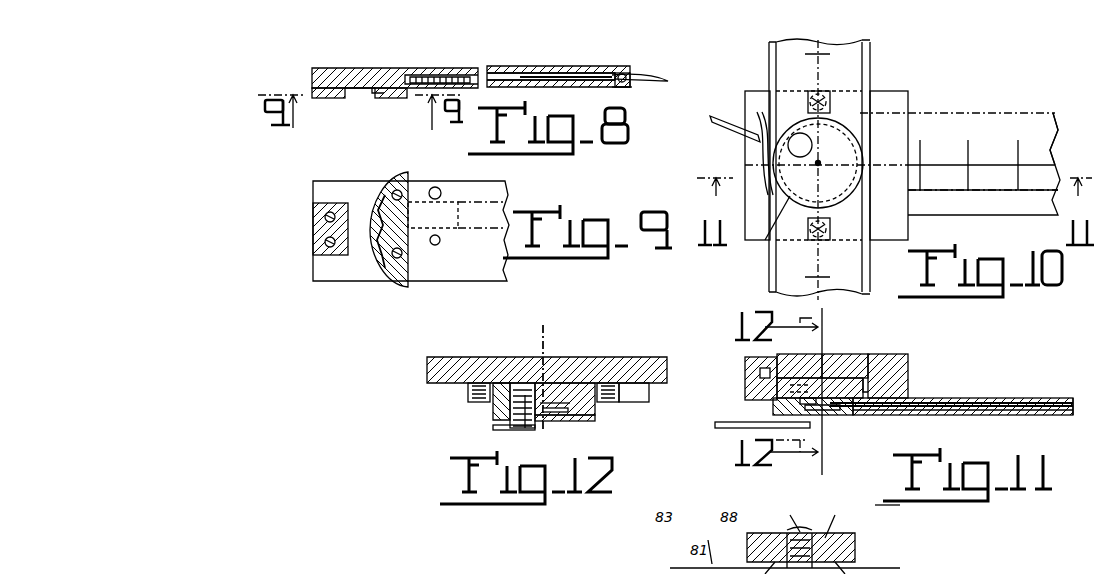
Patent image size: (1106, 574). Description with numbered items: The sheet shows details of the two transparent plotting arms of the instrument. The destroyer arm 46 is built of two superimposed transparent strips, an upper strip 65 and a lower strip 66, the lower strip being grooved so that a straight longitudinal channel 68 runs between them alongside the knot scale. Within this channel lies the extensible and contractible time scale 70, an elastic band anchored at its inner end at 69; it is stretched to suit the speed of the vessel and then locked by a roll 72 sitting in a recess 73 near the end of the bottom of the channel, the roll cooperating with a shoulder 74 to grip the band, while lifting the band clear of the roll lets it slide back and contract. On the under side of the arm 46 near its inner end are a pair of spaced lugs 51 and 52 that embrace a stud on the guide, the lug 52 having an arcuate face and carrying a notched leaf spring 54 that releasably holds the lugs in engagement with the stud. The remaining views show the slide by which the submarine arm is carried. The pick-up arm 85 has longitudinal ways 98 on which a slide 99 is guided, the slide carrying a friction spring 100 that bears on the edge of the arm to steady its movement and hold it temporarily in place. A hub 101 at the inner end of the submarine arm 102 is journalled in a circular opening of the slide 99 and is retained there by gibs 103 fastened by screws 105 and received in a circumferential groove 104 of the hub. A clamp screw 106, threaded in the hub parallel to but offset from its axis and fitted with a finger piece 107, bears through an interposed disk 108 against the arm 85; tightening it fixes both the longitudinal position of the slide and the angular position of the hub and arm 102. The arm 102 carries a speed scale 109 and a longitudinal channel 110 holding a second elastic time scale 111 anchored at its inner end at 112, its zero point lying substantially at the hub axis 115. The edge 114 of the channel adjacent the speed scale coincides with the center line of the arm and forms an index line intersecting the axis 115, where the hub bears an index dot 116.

In FIG. 8, the destroyer arm 46 is at (495, 66).
In FIG. 9, the destroyer arm 46 is at (505, 199).
In FIG. 8, the lug 51 is at (322, 99).
In FIG. 9, the lug 51 is at (313, 237).
In FIG. 8, the lug 52 is at (396, 99).
In FIG. 9, the lug 52 is at (404, 240).
In FIG. 8, the notched leaf spring 54 is at (373, 92).
In FIG. 9, the notched leaf spring 54 is at (384, 266).
In FIG. 8, the upper strip 65 is at (561, 68).
In FIG. 8, the lower strip 66 is at (564, 86).
In FIG. 8, the longitudinal channel 68 is at (546, 76).
In FIG. 8, the anchorage of time scale 69 is at (416, 71).
In FIG. 9, the anchorage of time scale 69 is at (422, 212).
In FIG. 8, the time scale 70 is at (640, 76).
In FIG. 9, the time scale 70 is at (494, 220).
In FIG. 8, the roll 72 is at (625, 88).
In FIG. 8, the recess 73 is at (650, 89).
In FIG. 8, the shoulder 74 is at (620, 73).
In FIG. 10, the pick-up arm 85 is at (765, 62).
In FIG. 11, the pick-up arm 85 is at (840, 355).
In FIG. 12, the pick-up arm 85 is at (606, 357).
In FIG. 10, the longitudinal ways 98 is at (868, 57).
In FIG. 11, the longitudinal ways 98 is at (858, 362).
In FIG. 10, the slide 99 is at (904, 104).
In FIG. 11, the slide 99 is at (918, 375).
In FIG. 12, the slide 99 is at (630, 398).
In FIG. 10, the friction spring 100 is at (757, 115).
In FIG. 11, the friction spring 100 is at (760, 368).
In FIG. 10, the hub 101 is at (797, 198).
In FIG. 11, the hub 101 is at (875, 376).
In FIG. 12, the hub 101 is at (558, 400).
In FIG. 10, the submarine arm 102 is at (1031, 108).
In FIG. 11, the submarine arm 102 is at (1040, 393).
In FIG. 12, the submarine arm 102 is at (592, 421).
In FIG. 10, the gibs 103 is at (810, 242).
In FIG. 12, the gibs 103 is at (617, 405).
In FIG. 10, the circumferential groove 104 is at (843, 124).
In FIG. 11, the circumferential groove 104 is at (770, 404).
In FIG. 12, the circumferential groove 104 is at (496, 385).
In FIG. 10, the screws 105 is at (830, 240).
In FIG. 12, the screws 105 is at (605, 403).
In FIG. 10, the clamp screw 106 is at (812, 148).
In FIG. 11, the clamp screw 106 is at (818, 418).
In FIG. 12, the clamp screw 106 is at (530, 412).
In FIG. 10, the finger piece 107 is at (732, 126).
In FIG. 11, the finger piece 107 is at (716, 430).
In FIG. 12, the finger piece 107 is at (500, 430).
In FIG. 12, the disk 108 is at (523, 383).
In FIG. 10, the speed scale 109 is at (935, 158).
In FIG. 11, the longitudinal channel 110 is at (950, 418).
In FIG. 12, the longitudinal channel 110 is at (560, 414).
In FIG. 10, the time scale 111 is at (1000, 190).
In FIG. 11, the time scale 111 is at (980, 398).
In FIG. 12, the time scale 111 is at (575, 385).
In FIG. 11, the anchorage of time scale 112 is at (832, 412).
In FIG. 10, the edge of channel 114 is at (1075, 138).
In FIG. 11, the axis of hub 115 is at (832, 368).
In FIG. 12, the axis of hub 115 is at (545, 335).
In FIG. 10, the index dot 116 is at (820, 165).